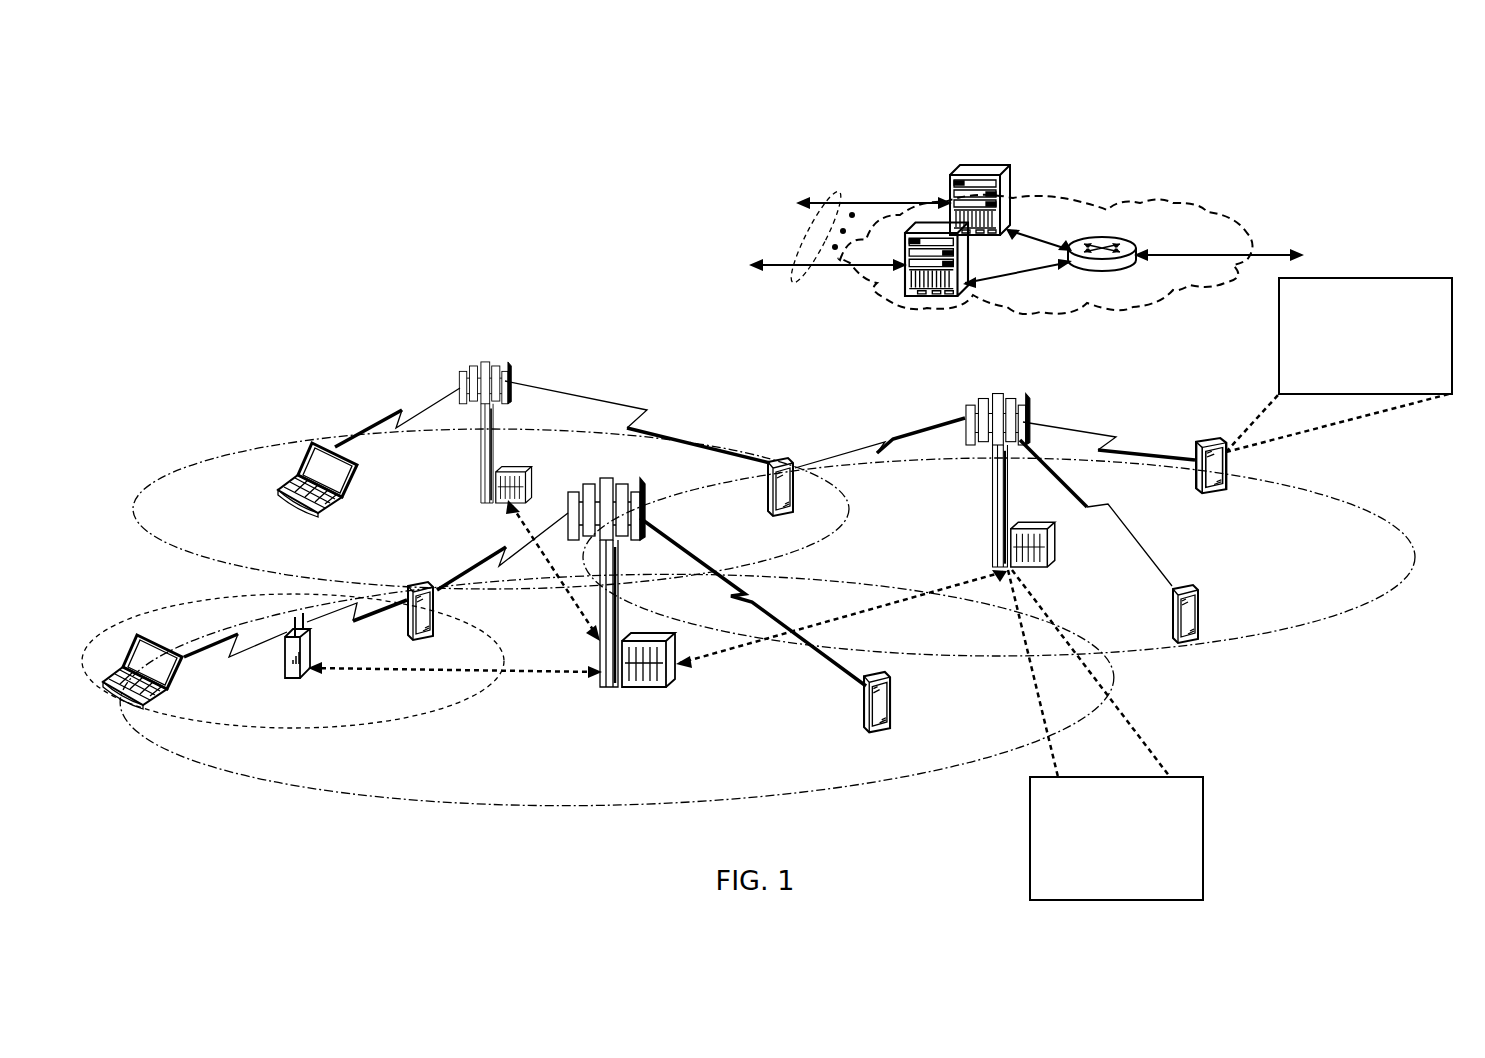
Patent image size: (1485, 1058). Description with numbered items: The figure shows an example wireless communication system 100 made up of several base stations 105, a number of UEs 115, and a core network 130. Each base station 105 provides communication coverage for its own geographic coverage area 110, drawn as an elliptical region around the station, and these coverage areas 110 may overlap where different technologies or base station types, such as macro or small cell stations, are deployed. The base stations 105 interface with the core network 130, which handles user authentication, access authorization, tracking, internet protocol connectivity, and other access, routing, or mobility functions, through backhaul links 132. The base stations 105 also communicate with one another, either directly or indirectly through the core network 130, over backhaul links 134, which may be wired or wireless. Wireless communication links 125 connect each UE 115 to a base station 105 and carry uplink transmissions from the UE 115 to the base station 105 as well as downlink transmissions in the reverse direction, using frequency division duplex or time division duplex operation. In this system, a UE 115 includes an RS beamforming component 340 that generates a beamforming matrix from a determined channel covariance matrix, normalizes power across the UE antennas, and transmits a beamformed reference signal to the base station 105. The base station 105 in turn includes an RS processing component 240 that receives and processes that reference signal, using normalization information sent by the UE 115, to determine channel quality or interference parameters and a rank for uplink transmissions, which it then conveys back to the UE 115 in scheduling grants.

The wireless communication system 100 is at (1310, 88).
The base station 105 is at (482, 474).
The geographic coverage area 110 is at (190, 552).
The UE 115 is at (326, 512).
The communication link 125 is at (400, 410).
The core network 130 is at (1140, 309).
The backhaul link 132 is at (808, 280).
The backhaul link 134 is at (566, 600).
The RS processing component 240 is at (1204, 840).
The RS beamforming component 340 is at (1365, 278).